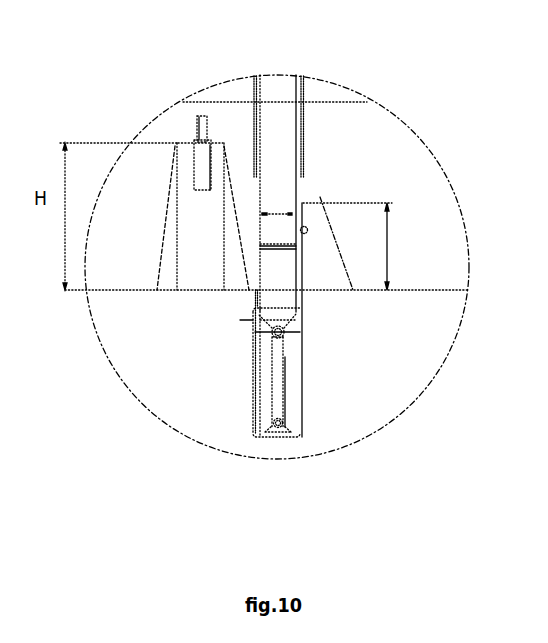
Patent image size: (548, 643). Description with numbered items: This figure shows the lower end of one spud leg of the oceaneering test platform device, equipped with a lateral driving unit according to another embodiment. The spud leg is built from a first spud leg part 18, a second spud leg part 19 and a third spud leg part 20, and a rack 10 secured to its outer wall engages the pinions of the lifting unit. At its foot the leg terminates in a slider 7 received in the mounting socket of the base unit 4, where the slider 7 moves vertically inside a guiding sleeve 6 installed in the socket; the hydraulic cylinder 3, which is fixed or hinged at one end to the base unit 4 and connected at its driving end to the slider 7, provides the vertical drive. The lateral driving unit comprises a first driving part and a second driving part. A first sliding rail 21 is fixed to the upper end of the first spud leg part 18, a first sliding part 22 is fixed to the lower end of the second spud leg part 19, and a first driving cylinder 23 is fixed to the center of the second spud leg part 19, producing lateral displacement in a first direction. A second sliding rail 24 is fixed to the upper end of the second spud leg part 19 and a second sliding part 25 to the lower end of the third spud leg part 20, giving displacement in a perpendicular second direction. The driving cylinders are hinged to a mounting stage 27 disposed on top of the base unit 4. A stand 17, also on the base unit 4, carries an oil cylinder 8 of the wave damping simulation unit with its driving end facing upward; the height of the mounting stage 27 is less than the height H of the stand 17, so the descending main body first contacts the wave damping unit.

The hydraulic cylinder 3 is at (258, 405).
The base unit 4 is at (358, 367).
The guiding sleeve 6 is at (257, 355).
The slider 7 is at (253, 320).
The oil cylinder 8 is at (198, 116).
The rack 10 is at (303, 118).
The stand 17 is at (193, 237).
The first spud leg part 18 is at (300, 229).
The second spud leg part 19 is at (297, 203).
The third spud leg part 20 is at (280, 128).
The first sliding rail 21 is at (293, 263).
The first sliding part 22 is at (305, 250).
The first driving cylinder 23 is at (352, 280).
The second sliding rail 24 is at (305, 202).
The second sliding part 25 is at (268, 207).
The mounting stage 27 is at (317, 208).